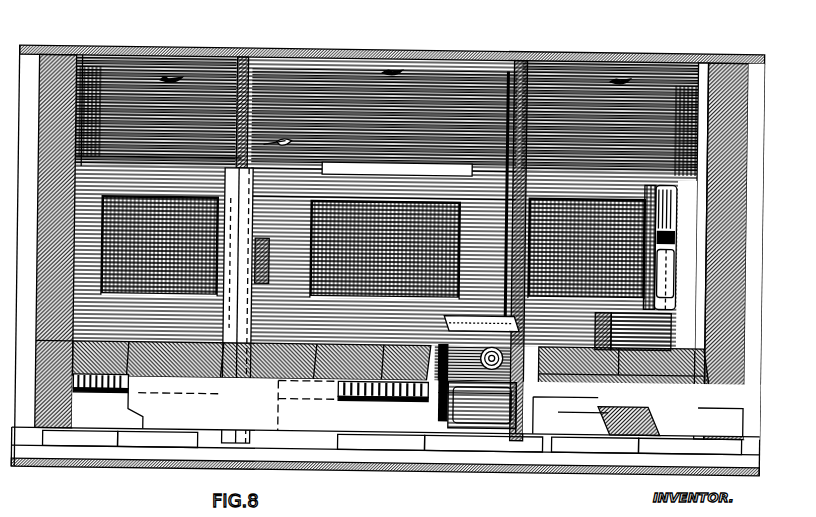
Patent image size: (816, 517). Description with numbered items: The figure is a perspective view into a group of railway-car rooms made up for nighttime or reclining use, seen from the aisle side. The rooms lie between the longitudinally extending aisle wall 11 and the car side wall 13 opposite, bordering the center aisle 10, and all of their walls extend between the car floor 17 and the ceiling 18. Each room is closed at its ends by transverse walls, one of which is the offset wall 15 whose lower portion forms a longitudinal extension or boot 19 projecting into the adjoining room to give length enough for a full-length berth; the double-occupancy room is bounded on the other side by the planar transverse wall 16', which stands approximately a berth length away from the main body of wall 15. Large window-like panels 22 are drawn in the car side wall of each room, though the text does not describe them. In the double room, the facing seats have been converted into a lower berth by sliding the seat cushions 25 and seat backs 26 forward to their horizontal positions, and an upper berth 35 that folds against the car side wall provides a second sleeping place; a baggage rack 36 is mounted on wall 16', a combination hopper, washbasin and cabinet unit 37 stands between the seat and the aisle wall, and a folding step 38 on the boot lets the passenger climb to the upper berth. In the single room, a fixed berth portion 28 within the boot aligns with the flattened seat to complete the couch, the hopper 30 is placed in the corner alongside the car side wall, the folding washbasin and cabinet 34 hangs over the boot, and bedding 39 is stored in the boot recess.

The center aisle 10 is at (458, 465).
The aisle wall 11 is at (178, 446).
The car side wall 13 is at (155, 111).
The transverse wall 15 is at (541, 57).
The transverse wall 16' is at (257, 96).
The car floor 17 is at (403, 466).
The ceiling 18 is at (443, 53).
The boot 19 is at (455, 314).
The screen panel 22 is at (373, 246).
The seat cushion 25 is at (251, 349).
The seat back 26 is at (277, 286).
The fixed berth portion 28 is at (503, 382).
The hopper 30 is at (623, 358).
The folding washbasin and cabinet 34 is at (669, 290).
The upper berth 35 is at (397, 170).
The baggage rack 36 is at (285, 141).
The combination hopper, washbasin and cabinet unit 37 is at (243, 385).
The folding step 38 is at (428, 392).
The bedding 39 is at (492, 353).